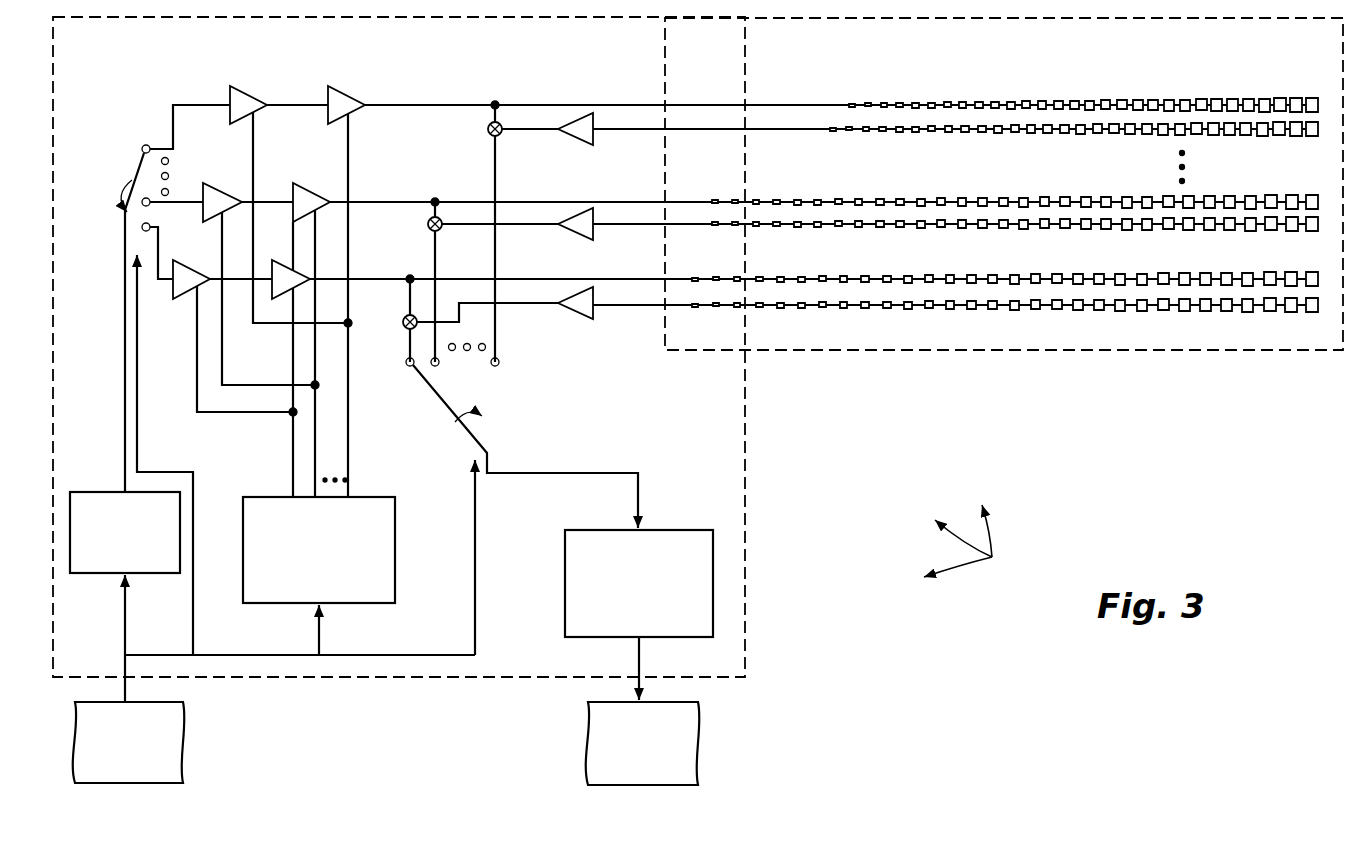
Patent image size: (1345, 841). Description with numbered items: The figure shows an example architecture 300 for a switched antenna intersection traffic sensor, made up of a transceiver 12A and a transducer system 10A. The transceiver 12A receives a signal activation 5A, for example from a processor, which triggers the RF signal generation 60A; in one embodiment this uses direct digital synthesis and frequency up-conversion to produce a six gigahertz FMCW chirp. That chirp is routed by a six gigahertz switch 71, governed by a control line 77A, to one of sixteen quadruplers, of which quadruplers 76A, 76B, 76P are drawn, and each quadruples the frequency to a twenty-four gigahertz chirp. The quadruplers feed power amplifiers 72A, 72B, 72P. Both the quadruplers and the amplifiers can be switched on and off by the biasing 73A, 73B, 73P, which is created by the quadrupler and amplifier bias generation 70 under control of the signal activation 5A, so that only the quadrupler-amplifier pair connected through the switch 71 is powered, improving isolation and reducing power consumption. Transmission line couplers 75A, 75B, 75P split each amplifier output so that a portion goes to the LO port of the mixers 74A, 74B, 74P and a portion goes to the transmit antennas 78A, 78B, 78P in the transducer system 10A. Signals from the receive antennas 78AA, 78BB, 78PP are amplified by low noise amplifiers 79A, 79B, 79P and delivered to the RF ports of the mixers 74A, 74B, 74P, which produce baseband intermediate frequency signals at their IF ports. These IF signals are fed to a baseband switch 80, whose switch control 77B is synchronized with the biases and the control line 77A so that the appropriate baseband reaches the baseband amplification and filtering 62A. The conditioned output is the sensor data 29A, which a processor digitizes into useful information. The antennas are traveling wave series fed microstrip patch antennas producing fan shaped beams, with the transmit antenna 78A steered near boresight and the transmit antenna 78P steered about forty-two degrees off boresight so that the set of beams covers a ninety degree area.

The transceiver 12A is at (399, 347).
The transducer system 10A is at (1004, 184).
The switch 71 is at (122, 222).
The quadrupler 76P is at (240, 122).
The quadrupler 76B is at (228, 184).
The quadrupler 76A is at (200, 262).
The amplifier 72P is at (335, 122).
The amplifier 72B is at (318, 184).
The amplifier 72A is at (295, 262).
The biasing 73P is at (350, 400).
The biasing 73B is at (318, 450).
The biasing 73A is at (292, 448).
The coupler 75P is at (495, 103).
The coupler 75B is at (435, 200).
The coupler 75A is at (410, 277).
The mixer 74P is at (488, 130).
The mixer 74B is at (428, 226).
The mixer 74A is at (403, 322).
The low noise amplifier 79P is at (582, 146).
The low noise amplifier 79B is at (578, 241).
The low noise amplifier 79A is at (578, 320).
The transmit antenna 78P is at (1010, 103).
The receive antenna 78PP is at (875, 132).
The transmit antenna 78B is at (1010, 200).
The receive antenna 78BB is at (905, 228).
The transmit antenna 78A is at (1010, 277).
The receive antenna 78AA is at (905, 309).
The baseband switch 80 is at (492, 431).
The control line 77A is at (138, 348).
The switch control 77B is at (472, 535).
The RF signal generation 60A is at (125, 532).
The quadrupler and amplifier bias generation 70 is at (319, 576).
The baseband amplification and filtering 62A is at (639, 615).
The signal activation 5A is at (129, 679).
The sensor data 29A is at (643, 743).
The architecture 300 is at (993, 558).